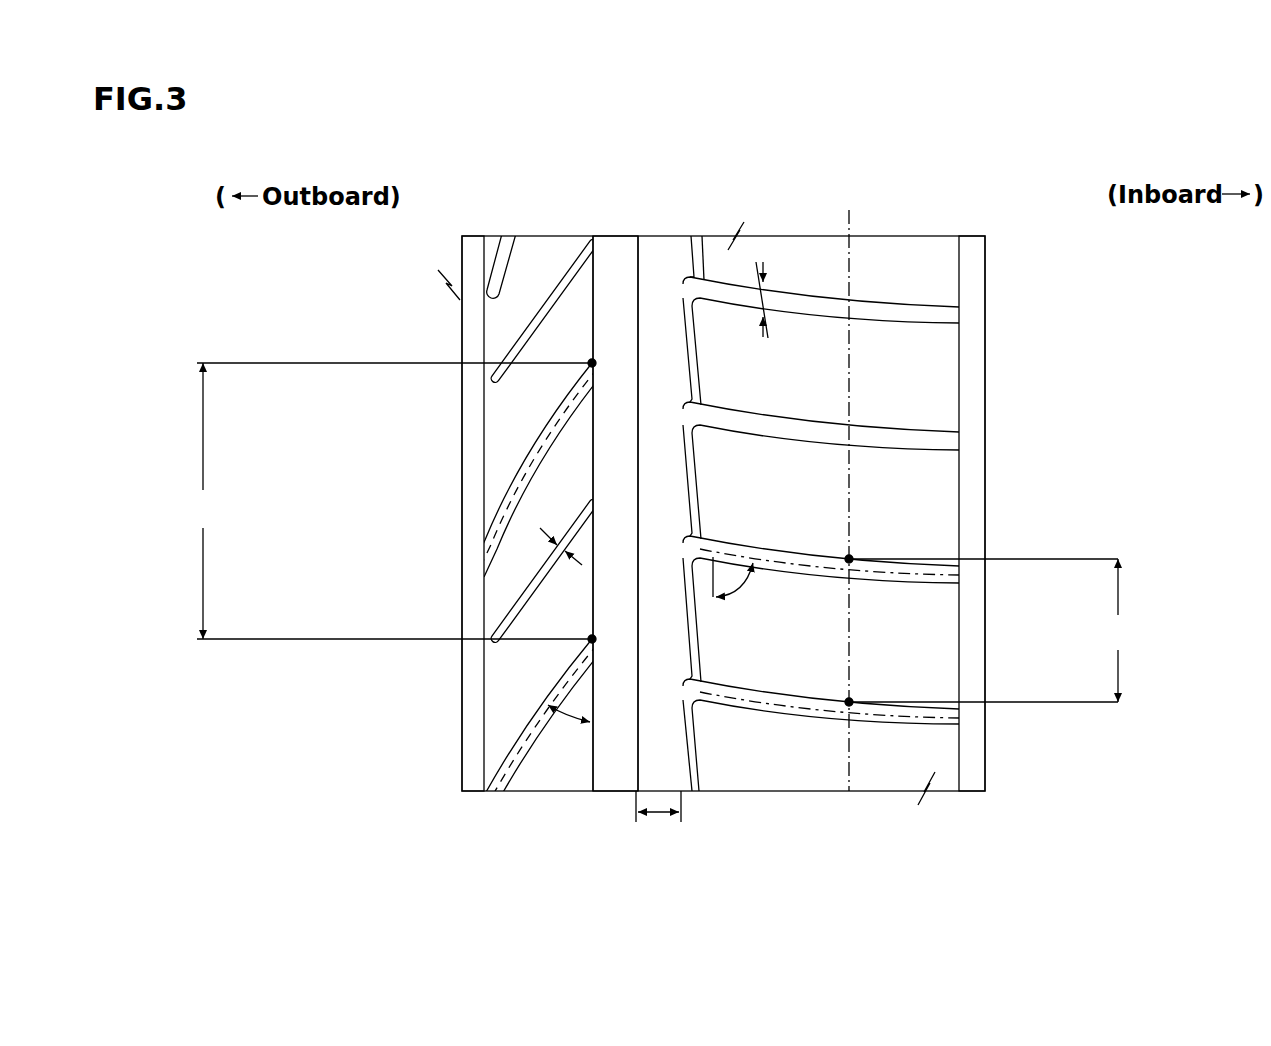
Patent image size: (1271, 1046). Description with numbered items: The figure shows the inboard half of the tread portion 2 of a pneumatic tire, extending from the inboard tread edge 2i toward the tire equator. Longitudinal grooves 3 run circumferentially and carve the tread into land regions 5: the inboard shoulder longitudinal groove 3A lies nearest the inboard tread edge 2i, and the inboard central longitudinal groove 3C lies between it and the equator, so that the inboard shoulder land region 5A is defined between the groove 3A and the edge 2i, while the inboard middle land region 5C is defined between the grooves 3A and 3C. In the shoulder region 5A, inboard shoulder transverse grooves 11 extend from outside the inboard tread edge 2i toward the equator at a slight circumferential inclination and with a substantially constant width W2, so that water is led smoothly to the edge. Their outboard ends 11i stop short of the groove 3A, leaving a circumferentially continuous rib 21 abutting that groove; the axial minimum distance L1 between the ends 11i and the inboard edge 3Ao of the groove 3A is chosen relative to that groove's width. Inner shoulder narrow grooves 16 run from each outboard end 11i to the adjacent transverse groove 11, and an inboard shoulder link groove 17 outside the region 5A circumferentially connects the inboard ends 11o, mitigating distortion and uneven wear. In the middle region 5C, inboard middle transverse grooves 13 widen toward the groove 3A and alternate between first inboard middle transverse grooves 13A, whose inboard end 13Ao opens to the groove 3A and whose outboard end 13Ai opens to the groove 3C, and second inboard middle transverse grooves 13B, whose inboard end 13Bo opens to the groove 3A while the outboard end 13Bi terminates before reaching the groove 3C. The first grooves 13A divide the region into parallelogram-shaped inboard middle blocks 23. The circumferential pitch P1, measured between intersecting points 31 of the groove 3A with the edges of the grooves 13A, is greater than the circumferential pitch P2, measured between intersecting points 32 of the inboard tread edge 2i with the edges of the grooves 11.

The tread portion 2 is at (947, 222).
The inboard tread edge 2i is at (850, 228).
The longitudinal grooves 3 is at (602, 556).
The inboard shoulder longitudinal groove 3A is at (596, 539).
The inboard edge of inboard shoulder longitudinal groove 3Ao is at (592, 768).
The inboard central longitudinal groove 3C is at (471, 768).
The land region 5 is at (871, 512).
The inboard shoulder land region 5A is at (871, 512).
The inboard middle land region 5C is at (510, 492).
The inboard shoulder transverse grooves 11 is at (889, 512).
The outboard ends of inboard shoulder transverse grooves 11i is at (679, 292).
The inboard ends of inboard shoulder transverse grooves 11o is at (960, 314).
The inboard middle transverse grooves 13 is at (428, 525).
The first inboard middle transverse grooves 13A is at (454, 587).
The inboard end of first inboard middle transverse groove 13Ao is at (600, 390).
The outboard end of first inboard middle transverse groove 13Ai is at (540, 498).
The second inboard middle transverse grooves 13B is at (452, 452).
The inboard end of second inboard middle transverse groove 13Bo is at (598, 498).
The outboard end of second inboard middle transverse groove 13Bi is at (494, 641).
The inner shoulder narrow grooves 16 is at (684, 338).
The inboard shoulder link groove 17 is at (970, 348).
The rib 21 is at (660, 520).
The inboard middle blocks 23 is at (508, 579).
The intersecting points 31 is at (592, 363).
The intersecting points 32 is at (849, 559).
The circumferential pitch of first inboard middle transverse grooves P1 is at (388, 501).
The circumferential pitch of inboard shoulder transverse grooves P2 is at (990, 630).
The axial minimum distance L1 is at (658, 816).
The transverse groove width W2 is at (654, 425).